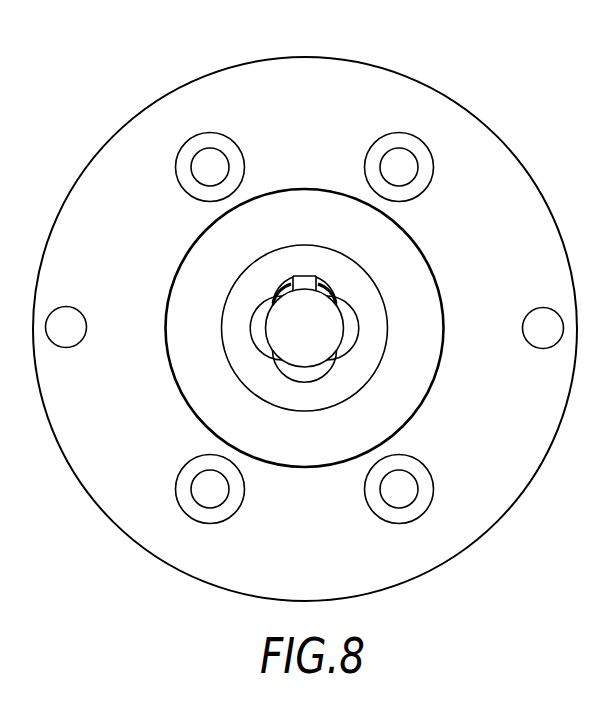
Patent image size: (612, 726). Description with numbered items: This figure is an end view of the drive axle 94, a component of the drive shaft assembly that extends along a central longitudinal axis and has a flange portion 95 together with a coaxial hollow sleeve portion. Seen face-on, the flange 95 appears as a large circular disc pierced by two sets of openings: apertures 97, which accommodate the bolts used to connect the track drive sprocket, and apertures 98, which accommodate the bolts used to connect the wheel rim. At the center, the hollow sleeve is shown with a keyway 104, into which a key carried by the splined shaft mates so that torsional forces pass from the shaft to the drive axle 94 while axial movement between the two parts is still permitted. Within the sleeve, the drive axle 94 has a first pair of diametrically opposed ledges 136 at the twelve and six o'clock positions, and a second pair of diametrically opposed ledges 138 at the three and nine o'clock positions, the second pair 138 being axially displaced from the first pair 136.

The drive axle 94 is at (53, 164).
The flange portion 95 is at (363, 58).
The apertures 97 is at (242, 148).
The apertures 98 is at (80, 320).
The keyway 104 is at (309, 282).
The first pair of diametrically opposed ledges 136 is at (283, 290).
The second pair of diametrically opposed ledges 138 is at (258, 338).